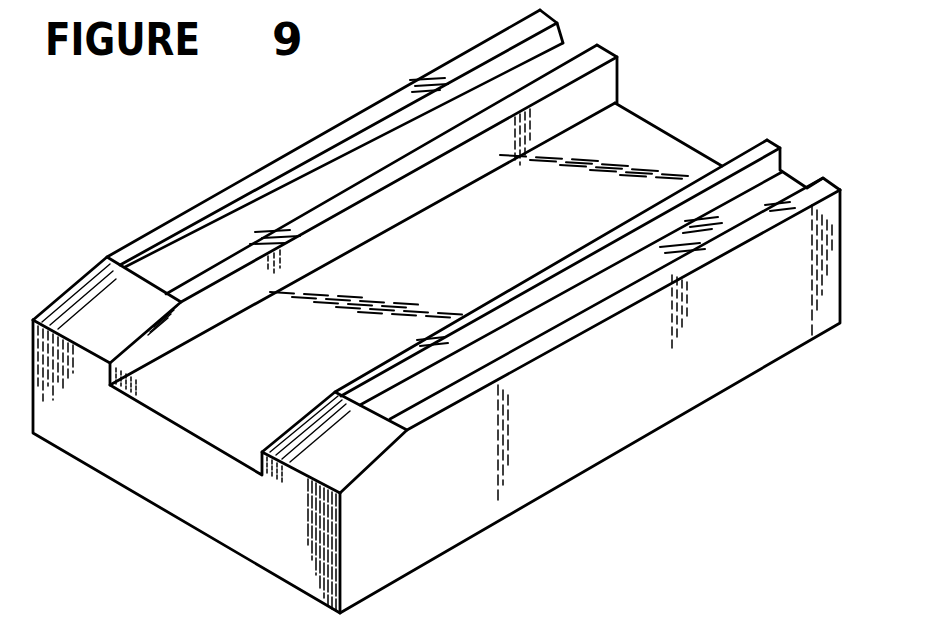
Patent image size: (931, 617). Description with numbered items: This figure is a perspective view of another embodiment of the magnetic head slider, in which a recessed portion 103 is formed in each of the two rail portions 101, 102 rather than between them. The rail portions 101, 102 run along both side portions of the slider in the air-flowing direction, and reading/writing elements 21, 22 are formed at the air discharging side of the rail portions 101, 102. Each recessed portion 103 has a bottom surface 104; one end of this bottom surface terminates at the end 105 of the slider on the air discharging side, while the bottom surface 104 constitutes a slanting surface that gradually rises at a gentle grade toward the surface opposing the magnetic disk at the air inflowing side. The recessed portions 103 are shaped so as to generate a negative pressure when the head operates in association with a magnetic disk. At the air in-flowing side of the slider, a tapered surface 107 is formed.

The reading/writing element 21 is at (606, 49).
The reading/writing element 22 is at (774, 146).
The rail portion 101 is at (284, 162).
The rail portion 102 is at (832, 187).
The recessed portion 103 is at (396, 135).
The bottom surface 104 is at (570, 50).
The end of the slider 105 is at (667, 128).
The tapered surface 107 is at (93, 316).